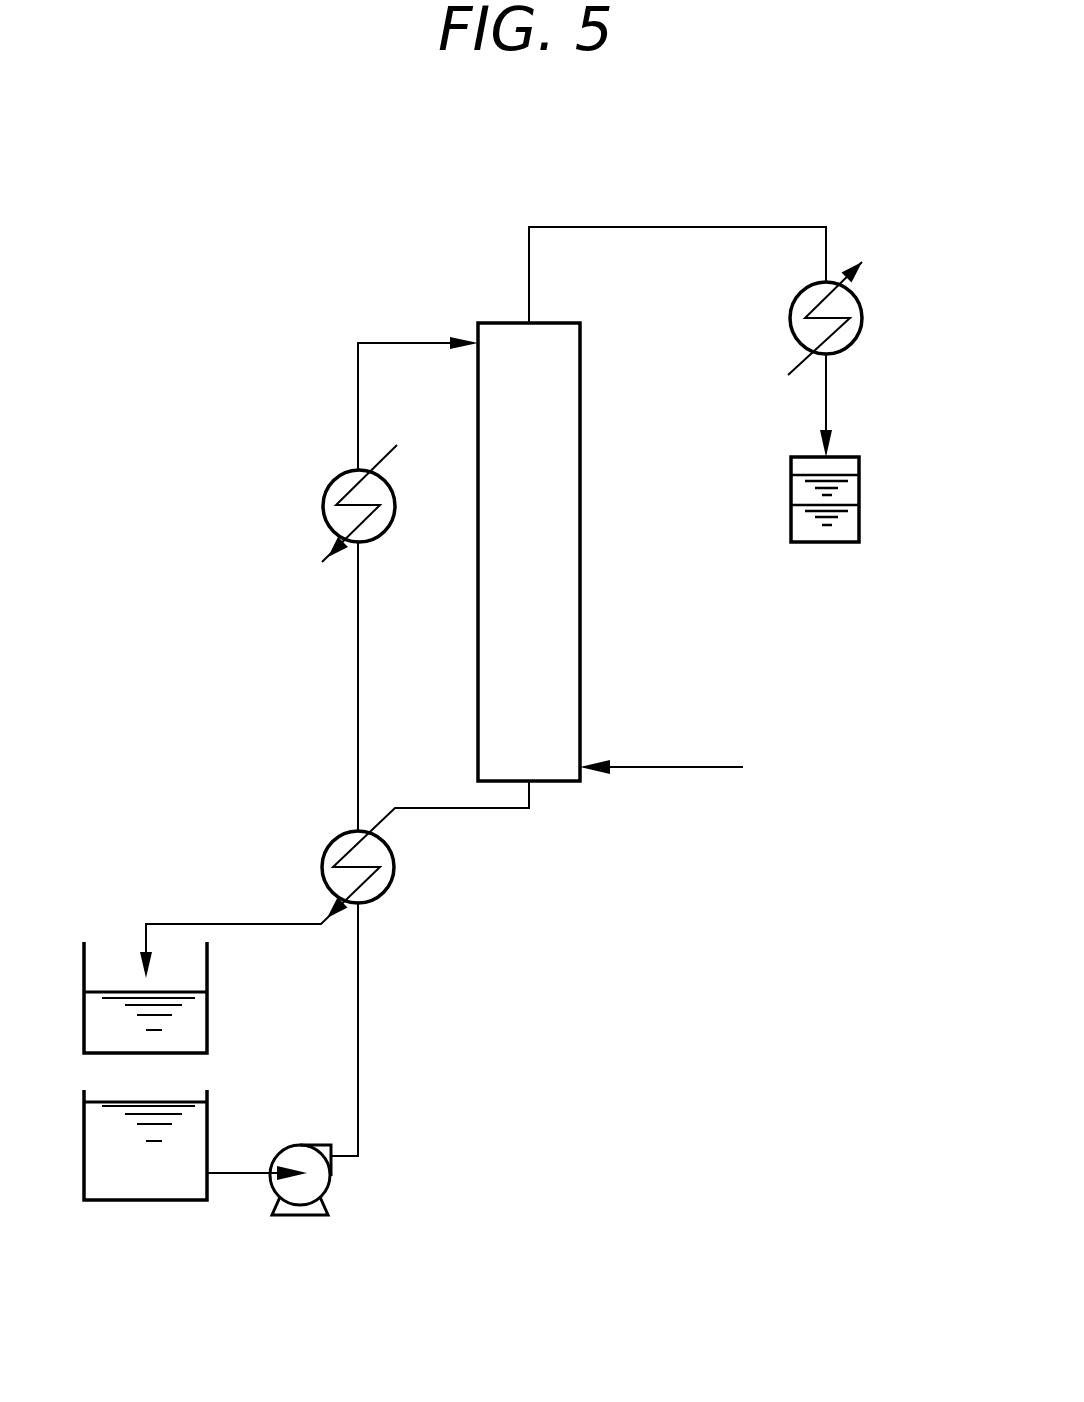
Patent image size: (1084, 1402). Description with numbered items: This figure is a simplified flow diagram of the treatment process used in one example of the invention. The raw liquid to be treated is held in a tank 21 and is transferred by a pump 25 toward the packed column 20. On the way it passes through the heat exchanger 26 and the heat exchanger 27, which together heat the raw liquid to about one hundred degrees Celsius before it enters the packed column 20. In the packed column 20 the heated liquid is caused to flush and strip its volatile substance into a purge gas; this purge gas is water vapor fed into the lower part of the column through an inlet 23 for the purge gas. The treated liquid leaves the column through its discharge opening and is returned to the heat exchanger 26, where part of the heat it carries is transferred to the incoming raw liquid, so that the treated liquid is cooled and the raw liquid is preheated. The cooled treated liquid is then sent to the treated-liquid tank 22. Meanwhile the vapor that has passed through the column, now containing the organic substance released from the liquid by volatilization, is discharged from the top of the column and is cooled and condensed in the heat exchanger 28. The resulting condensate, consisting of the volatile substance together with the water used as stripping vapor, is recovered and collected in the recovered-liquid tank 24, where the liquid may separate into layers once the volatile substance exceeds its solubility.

The packed column 20 is at (580, 437).
The tank for a liquid to be treated 21 is at (208, 1130).
The treated-liquid tank 22 is at (208, 1018).
The inlet for a purge gas 23 is at (686, 768).
The recovered-liquid tank 24 is at (859, 495).
The pump for transferring a liquid to be treated 25 is at (290, 1217).
The heat exchanger 26 is at (395, 865).
The heat exchanger 27 is at (334, 480).
The heat exchanger 28 is at (862, 305).